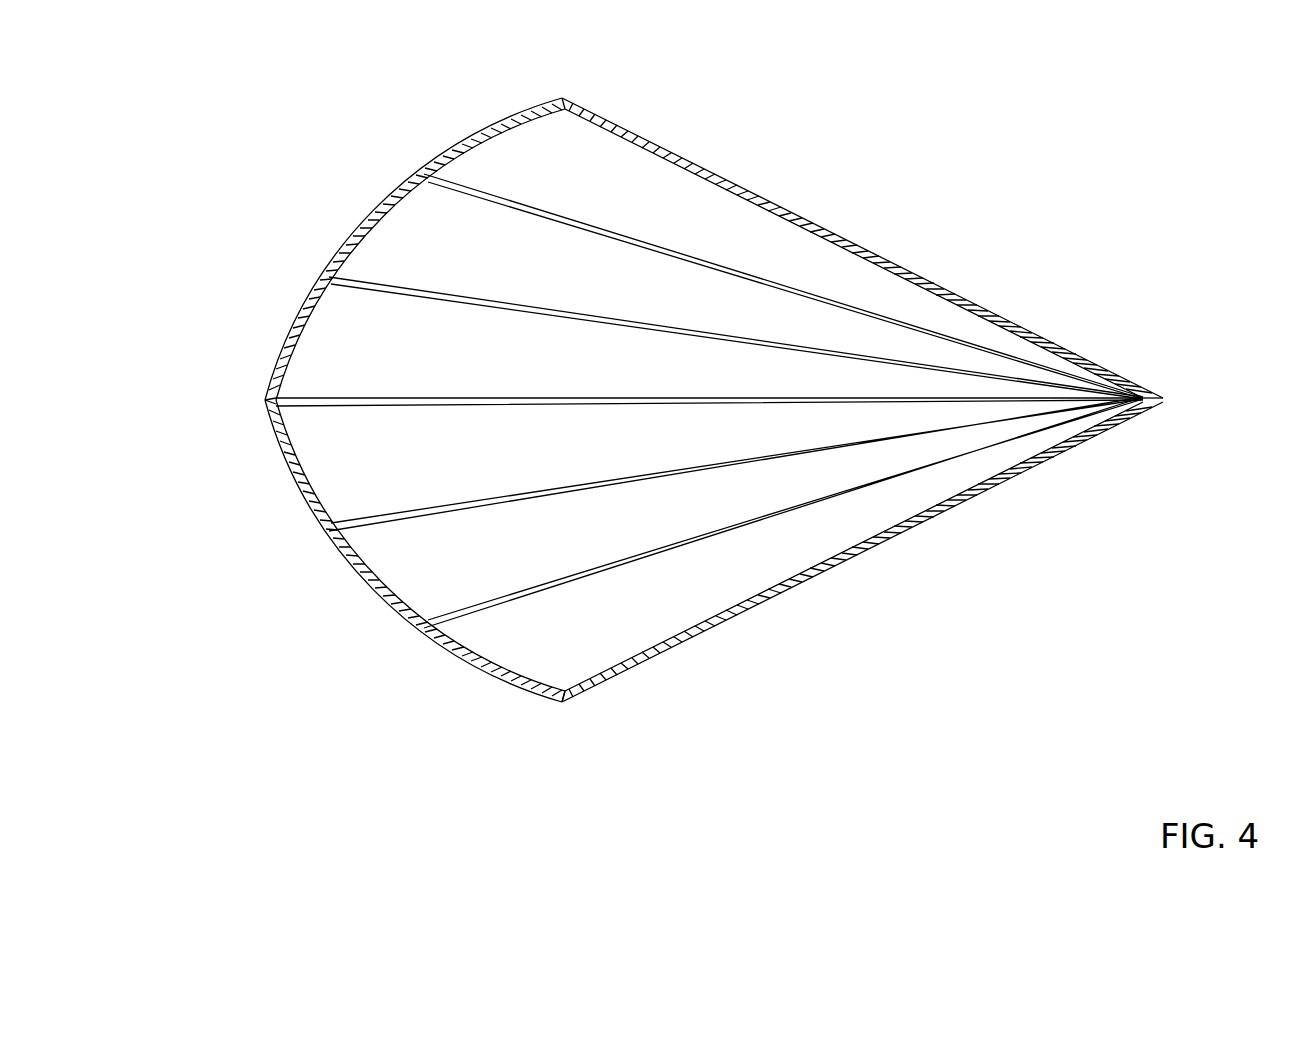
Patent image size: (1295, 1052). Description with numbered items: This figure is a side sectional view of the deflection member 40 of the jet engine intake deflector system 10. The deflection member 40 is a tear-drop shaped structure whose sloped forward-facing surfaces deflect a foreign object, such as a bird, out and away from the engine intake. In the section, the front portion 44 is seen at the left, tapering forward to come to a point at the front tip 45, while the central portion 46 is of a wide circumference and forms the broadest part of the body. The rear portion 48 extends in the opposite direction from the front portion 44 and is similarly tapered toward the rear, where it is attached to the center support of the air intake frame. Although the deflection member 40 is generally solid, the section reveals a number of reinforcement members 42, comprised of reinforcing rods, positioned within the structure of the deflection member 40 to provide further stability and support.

The jet engine intake deflector system 10 is at (298, 93).
The deflection member 40 is at (330, 240).
The reinforcement members 42 is at (723, 267).
The front portion 44 is at (289, 336).
The front tip 45 is at (262, 404).
The central portion 46 is at (562, 702).
The rear portion 48 is at (1138, 385).